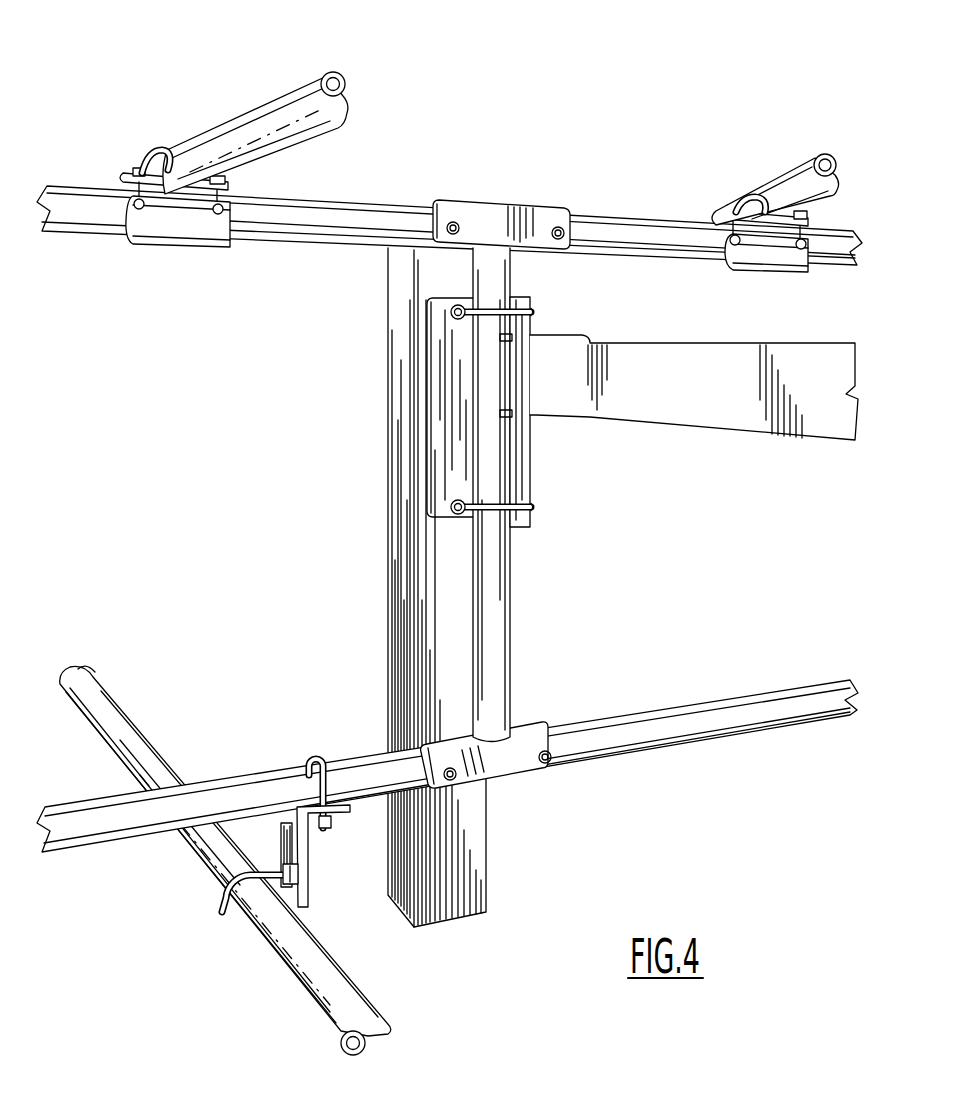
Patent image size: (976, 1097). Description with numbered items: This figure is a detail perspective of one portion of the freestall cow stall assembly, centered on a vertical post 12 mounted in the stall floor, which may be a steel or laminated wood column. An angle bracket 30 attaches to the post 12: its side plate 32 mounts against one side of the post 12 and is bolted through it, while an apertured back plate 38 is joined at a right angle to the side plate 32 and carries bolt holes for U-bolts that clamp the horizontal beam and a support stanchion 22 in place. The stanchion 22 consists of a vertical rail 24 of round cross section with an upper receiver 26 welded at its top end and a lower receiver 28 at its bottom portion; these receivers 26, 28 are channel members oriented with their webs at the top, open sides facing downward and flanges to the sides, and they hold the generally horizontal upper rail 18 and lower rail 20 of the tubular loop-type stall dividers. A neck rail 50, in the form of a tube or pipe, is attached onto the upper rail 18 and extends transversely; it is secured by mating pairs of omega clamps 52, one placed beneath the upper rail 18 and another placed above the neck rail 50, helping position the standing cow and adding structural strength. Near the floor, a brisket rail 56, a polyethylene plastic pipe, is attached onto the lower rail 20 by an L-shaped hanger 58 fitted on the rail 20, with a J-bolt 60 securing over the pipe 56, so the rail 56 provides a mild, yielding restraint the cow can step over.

The vertical post 12 is at (400, 488).
The upper rail 18 is at (290, 234).
The lower rail 20 is at (753, 706).
The support stanchion 22 is at (542, 617).
The vertical rail 24 is at (497, 590).
The upper receiver 26 is at (540, 218).
The lower receiver 28 is at (533, 723).
The angle bracket 30 is at (412, 341).
The side plate 32 is at (438, 423).
The apertured back plate 38 is at (527, 443).
The neck rail 50 is at (262, 122).
The omega clamp 52 is at (142, 158).
The brisket rail 56 is at (323, 1002).
The L-shaped hanger 58 is at (310, 846).
The J-bolt 60 is at (228, 918).